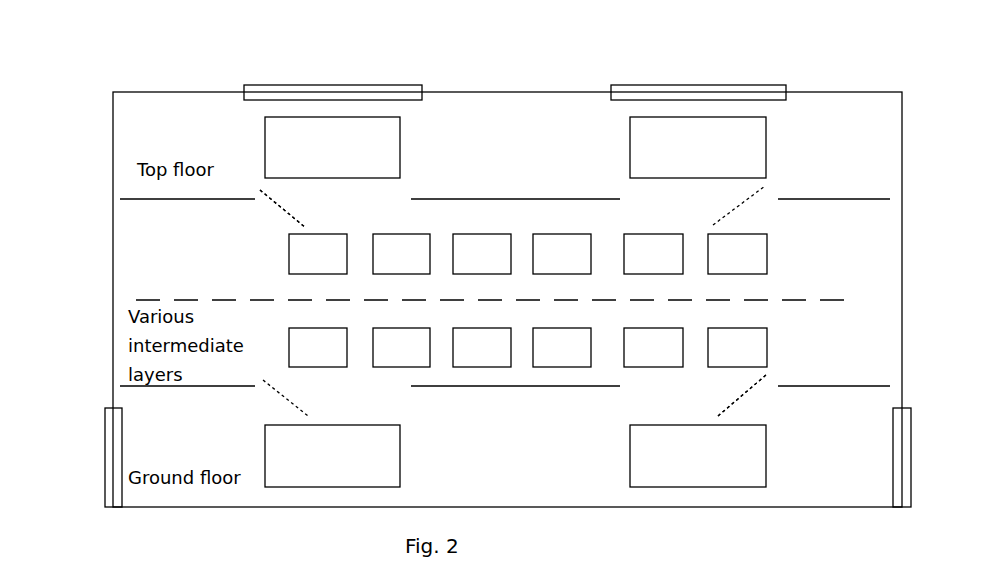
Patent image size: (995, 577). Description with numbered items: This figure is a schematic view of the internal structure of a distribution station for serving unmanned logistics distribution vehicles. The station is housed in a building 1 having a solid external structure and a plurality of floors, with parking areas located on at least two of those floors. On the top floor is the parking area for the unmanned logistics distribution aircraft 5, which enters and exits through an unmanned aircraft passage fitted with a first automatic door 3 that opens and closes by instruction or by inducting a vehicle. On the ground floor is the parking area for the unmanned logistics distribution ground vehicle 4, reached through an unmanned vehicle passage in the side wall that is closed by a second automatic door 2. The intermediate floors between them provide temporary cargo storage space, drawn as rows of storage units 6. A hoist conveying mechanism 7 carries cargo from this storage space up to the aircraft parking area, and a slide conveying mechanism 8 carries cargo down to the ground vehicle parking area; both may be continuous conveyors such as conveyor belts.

The building 1 is at (112, 258).
The second automatic door 2 is at (105, 469).
The first automatic door 3 is at (628, 85).
The unmanned logistics distribution ground vehicle 4 is at (400, 470).
The unmanned logistics distribution aircraft 5 is at (400, 160).
The intermediate layer units 6 is at (760, 258).
The hoist conveying mechanism 7 is at (290, 212).
The slide conveying mechanism 8 is at (748, 390).